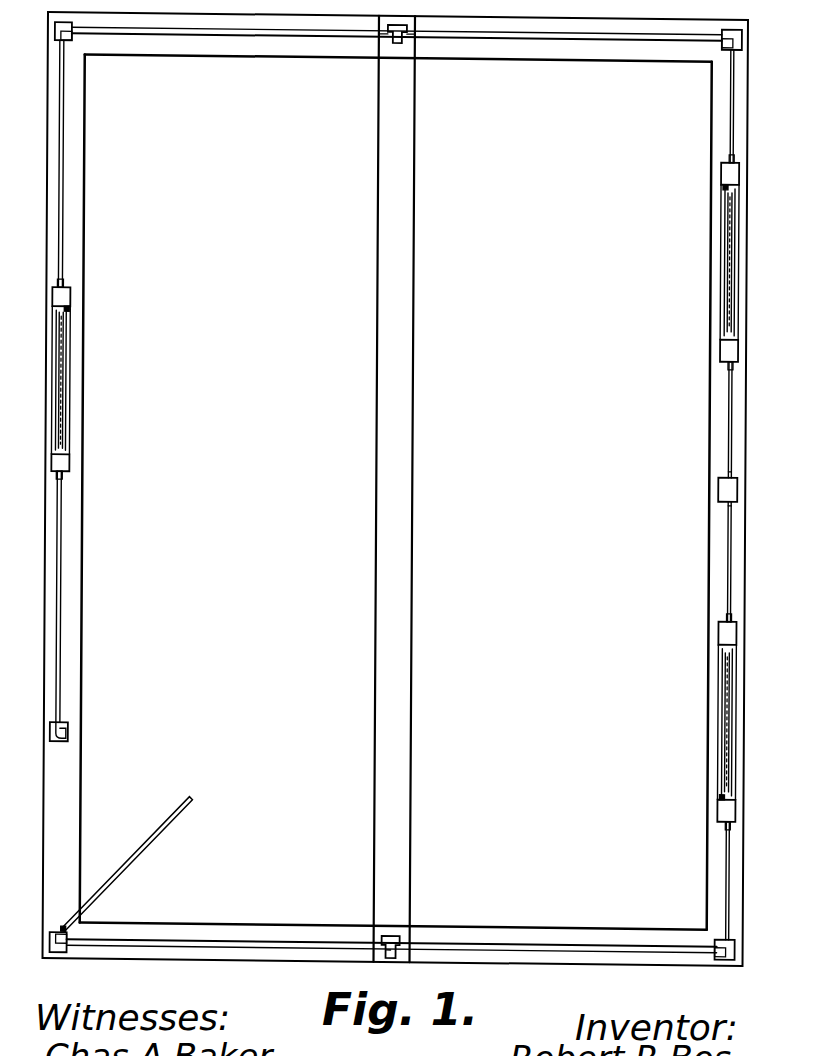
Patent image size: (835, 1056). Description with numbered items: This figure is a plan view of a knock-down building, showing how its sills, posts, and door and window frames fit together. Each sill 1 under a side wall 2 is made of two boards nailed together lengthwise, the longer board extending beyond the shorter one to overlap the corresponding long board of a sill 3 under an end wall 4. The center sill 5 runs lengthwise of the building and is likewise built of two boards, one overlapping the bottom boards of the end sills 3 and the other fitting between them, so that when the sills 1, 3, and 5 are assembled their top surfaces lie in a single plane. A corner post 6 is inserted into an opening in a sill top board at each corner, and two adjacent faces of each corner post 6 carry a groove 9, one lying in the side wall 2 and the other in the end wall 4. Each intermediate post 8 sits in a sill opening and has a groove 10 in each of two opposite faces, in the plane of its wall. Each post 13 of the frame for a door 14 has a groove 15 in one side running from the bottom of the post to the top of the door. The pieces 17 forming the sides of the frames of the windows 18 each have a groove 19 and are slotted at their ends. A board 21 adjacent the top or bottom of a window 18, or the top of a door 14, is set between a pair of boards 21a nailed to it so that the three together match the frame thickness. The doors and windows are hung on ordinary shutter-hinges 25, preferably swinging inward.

The sill 1 is at (78, 396).
The side wall 2 is at (62, 489).
The sill 3 is at (262, 55).
The end wall 4 is at (202, 31).
The center sill 5 is at (398, 318).
The corner post 6 is at (55, 33).
The intermediate post 8 is at (397, 39).
The groove 9 is at (72, 37).
The groove 10 is at (382, 33).
The post 13 is at (59, 742).
The door 14 is at (143, 842).
The groove 15 is at (70, 732).
The pieces 17 is at (72, 296).
The window 18 is at (67, 366).
The groove 19 is at (63, 284).
The board 21 is at (138, 34).
The boards 21a is at (56, 412).
The shutter-hinges 25 is at (70, 310).